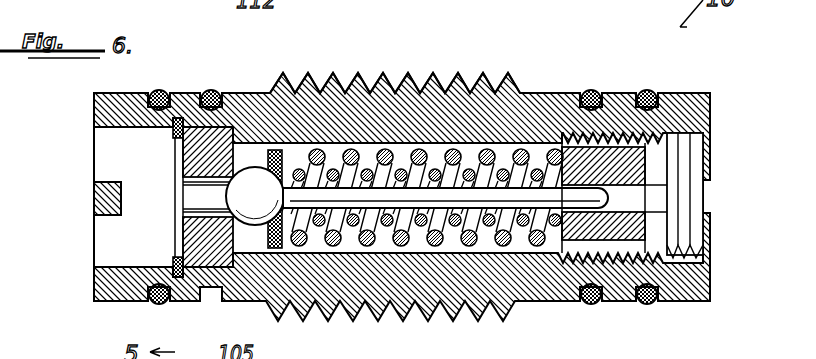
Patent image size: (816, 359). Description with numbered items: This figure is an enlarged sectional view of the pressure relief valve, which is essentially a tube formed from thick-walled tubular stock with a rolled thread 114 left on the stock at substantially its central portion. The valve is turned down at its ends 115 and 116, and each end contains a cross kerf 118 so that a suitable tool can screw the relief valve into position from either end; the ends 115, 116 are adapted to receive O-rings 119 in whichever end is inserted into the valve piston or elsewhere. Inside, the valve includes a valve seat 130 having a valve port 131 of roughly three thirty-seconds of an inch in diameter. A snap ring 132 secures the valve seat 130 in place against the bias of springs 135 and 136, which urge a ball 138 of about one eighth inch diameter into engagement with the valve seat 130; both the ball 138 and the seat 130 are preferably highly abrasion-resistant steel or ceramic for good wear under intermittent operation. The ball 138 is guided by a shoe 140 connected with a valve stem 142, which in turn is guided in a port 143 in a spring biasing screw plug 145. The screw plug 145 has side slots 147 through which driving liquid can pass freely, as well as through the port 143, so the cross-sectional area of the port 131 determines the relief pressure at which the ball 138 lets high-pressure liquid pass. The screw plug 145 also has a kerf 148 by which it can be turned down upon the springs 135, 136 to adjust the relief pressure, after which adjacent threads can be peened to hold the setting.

The rolled thread 114 is at (458, 74).
The turned-down end 115 is at (203, 91).
The turned-down end 116 is at (558, 91).
The cross kerf 118 is at (106, 213).
The O-rings 119 is at (157, 90).
The valve seat 130 is at (188, 156).
The valve port 131 is at (183, 222).
The snap ring 132 is at (172, 128).
The spring 135 is at (327, 242).
The spring 136 is at (383, 224).
The ball 138 is at (262, 208).
The shoe 140 is at (270, 249).
The valve stem 142 is at (583, 199).
The port 143 is at (642, 190).
The spring biasing screw plug 145 is at (655, 228).
The side slots 147 is at (614, 292).
The kerf 148 is at (700, 247).